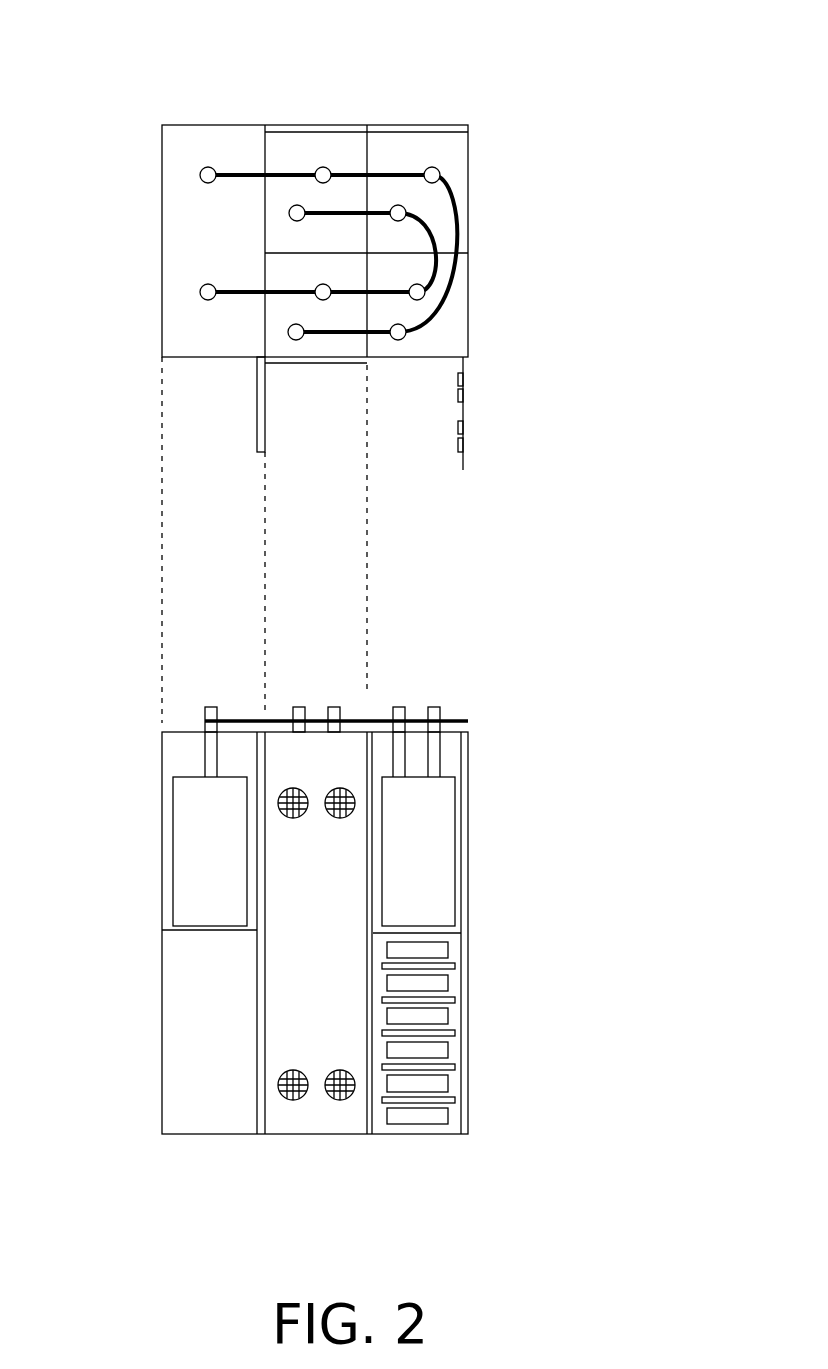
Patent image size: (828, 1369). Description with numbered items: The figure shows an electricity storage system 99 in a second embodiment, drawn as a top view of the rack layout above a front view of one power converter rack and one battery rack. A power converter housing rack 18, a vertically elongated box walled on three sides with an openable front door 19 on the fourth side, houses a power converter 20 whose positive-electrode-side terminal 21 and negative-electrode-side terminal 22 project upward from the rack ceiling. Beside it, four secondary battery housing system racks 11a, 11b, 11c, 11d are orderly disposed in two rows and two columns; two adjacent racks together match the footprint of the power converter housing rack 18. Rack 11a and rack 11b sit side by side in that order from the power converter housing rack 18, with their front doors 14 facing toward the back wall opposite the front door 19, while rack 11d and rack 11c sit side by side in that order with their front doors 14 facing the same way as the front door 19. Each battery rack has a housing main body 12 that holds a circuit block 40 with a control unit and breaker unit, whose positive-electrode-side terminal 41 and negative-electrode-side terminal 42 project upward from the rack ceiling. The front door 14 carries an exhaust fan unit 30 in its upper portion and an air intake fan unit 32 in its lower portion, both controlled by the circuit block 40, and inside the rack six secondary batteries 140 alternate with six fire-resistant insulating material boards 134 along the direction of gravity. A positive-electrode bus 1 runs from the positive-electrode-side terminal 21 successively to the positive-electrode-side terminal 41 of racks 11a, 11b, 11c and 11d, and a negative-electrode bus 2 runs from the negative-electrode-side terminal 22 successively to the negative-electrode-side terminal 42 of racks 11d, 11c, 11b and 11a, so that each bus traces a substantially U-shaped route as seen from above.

The electricity storage system 99 is at (578, 76).
The positive-electrode bus 1 is at (236, 170).
The negative-electrode bus 2 is at (232, 297).
The front door 14 is at (283, 128).
The secondary battery housing system rack 11a is at (330, 145).
The secondary battery housing system rack 11b is at (447, 140).
The secondary battery housing system rack 11c is at (460, 325).
The secondary battery housing system rack 11d is at (330, 345).
The housing main body 12 is at (458, 1125).
The power converter housing rack 18 is at (170, 145).
The front door 19 is at (257, 418).
The power converter 20 is at (173, 884).
The positive-electrode-side terminal 21 is at (203, 183).
The negative-electrode-side terminal 22 is at (203, 300).
The exhaust fan unit 30 is at (452, 436).
The air intake fan unit 32 is at (293, 1070).
The circuit block 40 is at (455, 833).
The positive-electrode-side terminal 41 is at (318, 168).
The negative-electrode-side terminal 42 is at (404, 215).
The fire-resistant insulating material board 134 is at (383, 1102).
The secondary battery 140 is at (437, 1115).